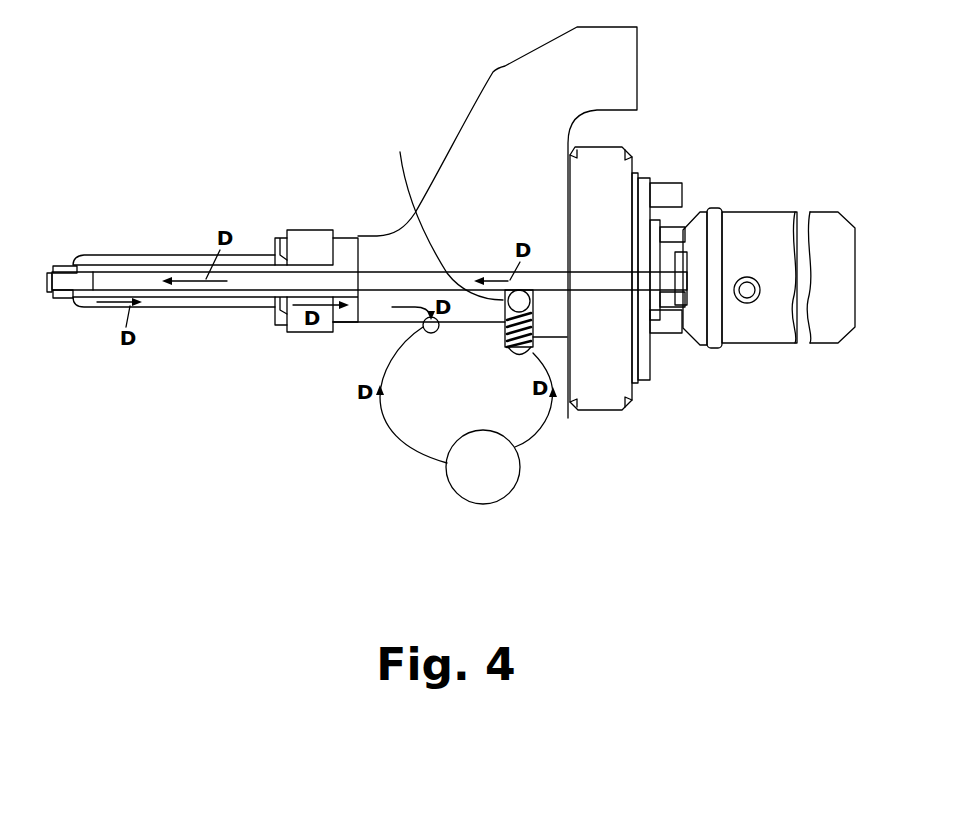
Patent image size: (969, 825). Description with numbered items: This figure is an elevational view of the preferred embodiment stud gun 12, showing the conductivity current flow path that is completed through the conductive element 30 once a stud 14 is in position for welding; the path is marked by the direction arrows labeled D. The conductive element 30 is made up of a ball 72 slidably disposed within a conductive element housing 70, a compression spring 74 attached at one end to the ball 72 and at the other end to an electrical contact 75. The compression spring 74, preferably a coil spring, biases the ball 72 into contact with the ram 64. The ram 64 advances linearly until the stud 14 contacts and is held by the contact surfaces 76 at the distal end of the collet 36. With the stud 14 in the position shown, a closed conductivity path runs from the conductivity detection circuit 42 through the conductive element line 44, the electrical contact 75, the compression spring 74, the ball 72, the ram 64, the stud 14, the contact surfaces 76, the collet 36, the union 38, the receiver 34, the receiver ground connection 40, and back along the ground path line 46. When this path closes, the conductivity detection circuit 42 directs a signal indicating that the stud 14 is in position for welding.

The surgical instrument drive assembly 12 is at (331, 62).
The stud 14 is at (69, 280).
The conductive element 30 is at (507, 309).
The receiver 34 is at (488, 107).
The collet 36 is at (168, 258).
The union 38 is at (298, 247).
The receiver ground connection 40 is at (430, 333).
The conductivity detection circuit 42 is at (507, 487).
The conductive element line 44 is at (547, 423).
The ground path line 46 is at (388, 426).
The ram 64 is at (397, 280).
The conductive element housing 70 is at (506, 330).
The ball 72 is at (443, 210).
The compression spring 74 is at (513, 346).
The electrical contact 75 is at (515, 356).
The contact surfaces 76 is at (58, 268).